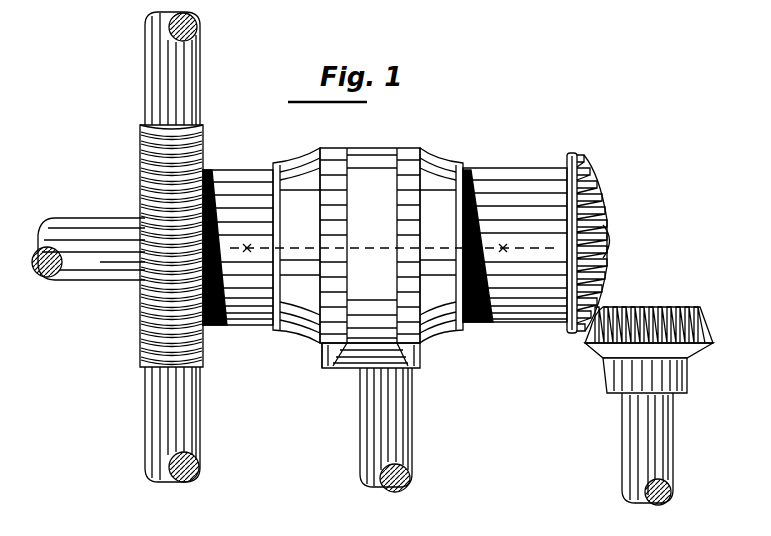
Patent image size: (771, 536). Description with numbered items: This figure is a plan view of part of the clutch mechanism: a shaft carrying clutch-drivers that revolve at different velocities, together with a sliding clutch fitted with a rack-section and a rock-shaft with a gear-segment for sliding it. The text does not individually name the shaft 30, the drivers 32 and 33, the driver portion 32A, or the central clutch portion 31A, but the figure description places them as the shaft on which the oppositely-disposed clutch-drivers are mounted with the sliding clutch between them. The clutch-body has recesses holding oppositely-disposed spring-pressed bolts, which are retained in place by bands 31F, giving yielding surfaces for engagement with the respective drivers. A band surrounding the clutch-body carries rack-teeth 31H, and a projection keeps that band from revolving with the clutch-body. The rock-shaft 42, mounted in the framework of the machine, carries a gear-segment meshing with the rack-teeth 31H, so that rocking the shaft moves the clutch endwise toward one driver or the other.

The shaft 30 is at (113, 253).
The hub central band 31A is at (370, 245).
The bands 31F is at (298, 320).
The rack-teeth 31H is at (355, 357).
The worm gear 32 is at (163, 168).
The shaft section 32A is at (235, 198).
The shaft section 33 is at (510, 197).
The rock-shaft 42 is at (393, 443).